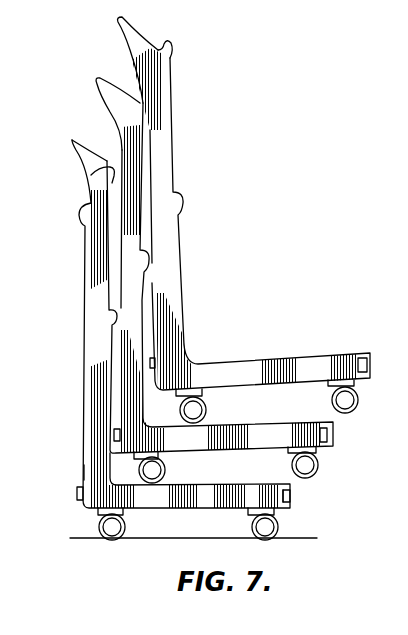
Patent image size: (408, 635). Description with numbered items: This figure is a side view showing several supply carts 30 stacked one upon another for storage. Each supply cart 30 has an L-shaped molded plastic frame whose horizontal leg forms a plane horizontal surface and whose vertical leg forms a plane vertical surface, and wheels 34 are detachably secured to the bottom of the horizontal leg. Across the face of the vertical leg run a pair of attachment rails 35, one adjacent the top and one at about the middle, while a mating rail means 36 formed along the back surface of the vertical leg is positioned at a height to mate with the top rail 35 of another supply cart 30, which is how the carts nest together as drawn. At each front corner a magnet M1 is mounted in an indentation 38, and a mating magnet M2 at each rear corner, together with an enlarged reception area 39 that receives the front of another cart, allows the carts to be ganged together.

The supply cart 30 is at (112, 228).
The wheels 34 is at (98, 527).
The attachment rails 35 is at (142, 104).
The mating rail means 36 is at (135, 101).
The indentation 38 is at (290, 505).
The enlarged reception area 39 is at (78, 471).
The magnet M1 is at (292, 494).
The mating magnet M2 is at (158, 363).